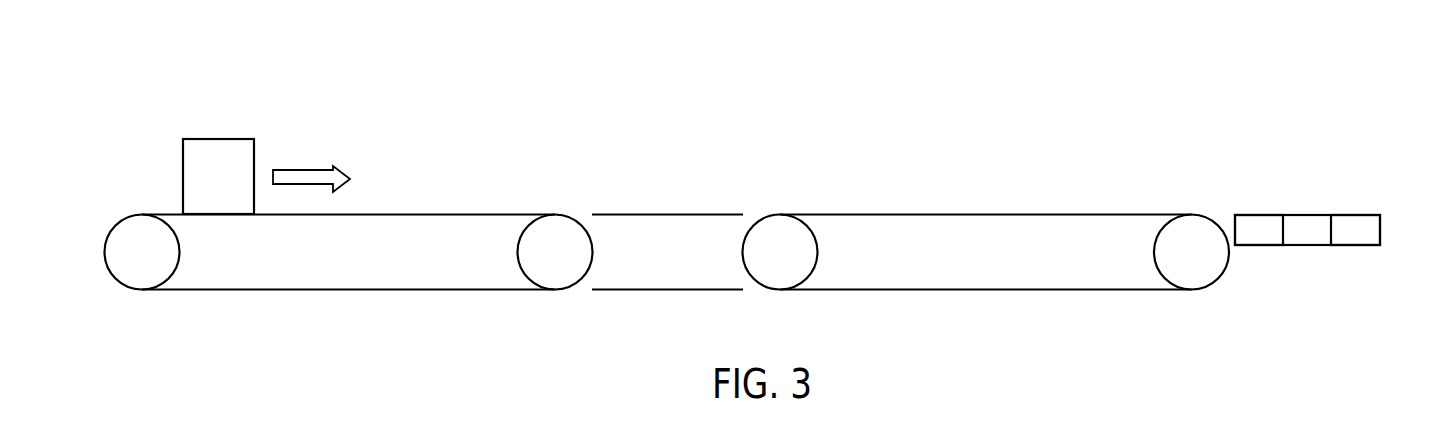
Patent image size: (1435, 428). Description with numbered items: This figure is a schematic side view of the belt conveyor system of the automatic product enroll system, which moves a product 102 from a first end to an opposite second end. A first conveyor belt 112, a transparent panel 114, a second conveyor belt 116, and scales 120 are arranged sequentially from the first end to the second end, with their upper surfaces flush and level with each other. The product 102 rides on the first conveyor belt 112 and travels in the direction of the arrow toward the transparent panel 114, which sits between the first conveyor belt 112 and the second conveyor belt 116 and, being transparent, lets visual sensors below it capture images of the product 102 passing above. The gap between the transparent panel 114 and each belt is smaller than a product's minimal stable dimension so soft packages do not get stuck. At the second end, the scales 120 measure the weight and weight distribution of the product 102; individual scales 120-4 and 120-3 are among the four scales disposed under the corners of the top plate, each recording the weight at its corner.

The product 102 is at (217, 139).
The first conveyor belt 112 is at (439, 213).
The transparent panel 114 is at (667, 213).
The second conveyor belt 116 is at (1003, 213).
The scales 120 is at (1333, 176).
The scale 120-4 is at (1258, 233).
The scale 120-3 is at (1355, 227).